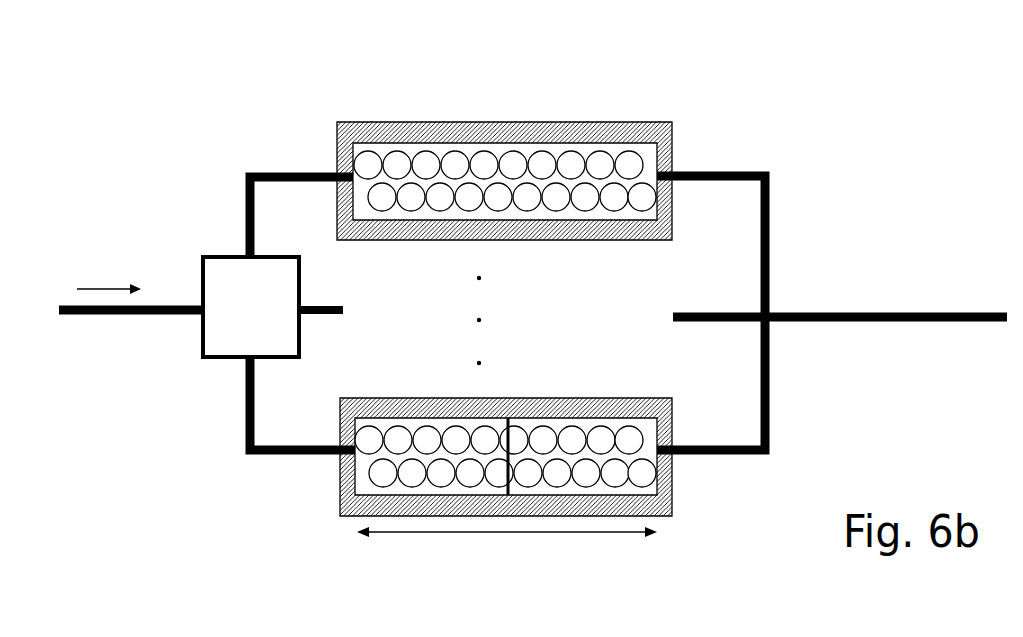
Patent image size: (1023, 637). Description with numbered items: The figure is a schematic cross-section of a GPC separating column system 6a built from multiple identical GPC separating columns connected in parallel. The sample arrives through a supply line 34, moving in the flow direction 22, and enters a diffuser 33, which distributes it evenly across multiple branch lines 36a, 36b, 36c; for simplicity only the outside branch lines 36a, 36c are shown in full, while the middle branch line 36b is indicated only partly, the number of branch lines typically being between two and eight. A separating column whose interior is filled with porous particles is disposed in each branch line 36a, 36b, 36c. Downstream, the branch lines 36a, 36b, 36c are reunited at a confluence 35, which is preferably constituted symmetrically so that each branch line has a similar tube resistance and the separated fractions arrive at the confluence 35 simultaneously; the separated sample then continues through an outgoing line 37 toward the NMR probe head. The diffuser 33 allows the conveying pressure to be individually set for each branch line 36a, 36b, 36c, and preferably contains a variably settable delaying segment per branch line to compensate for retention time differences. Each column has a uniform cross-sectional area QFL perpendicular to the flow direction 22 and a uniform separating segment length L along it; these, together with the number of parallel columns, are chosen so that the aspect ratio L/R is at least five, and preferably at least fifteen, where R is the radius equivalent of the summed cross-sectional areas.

The GPC separating column system 6a is at (560, 134).
The flow direction 22 is at (109, 279).
The diffuser 33 is at (232, 338).
The supply line 34 is at (110, 315).
The confluence 35 is at (769, 313).
The branch line 36a is at (280, 172).
The branch line 36b is at (318, 305).
The branch line 36c is at (280, 455).
The outgoing line 37 is at (877, 313).
The uniform cross-sectional area QFL is at (511, 418).
The uniform length of the separating segments L is at (507, 544).